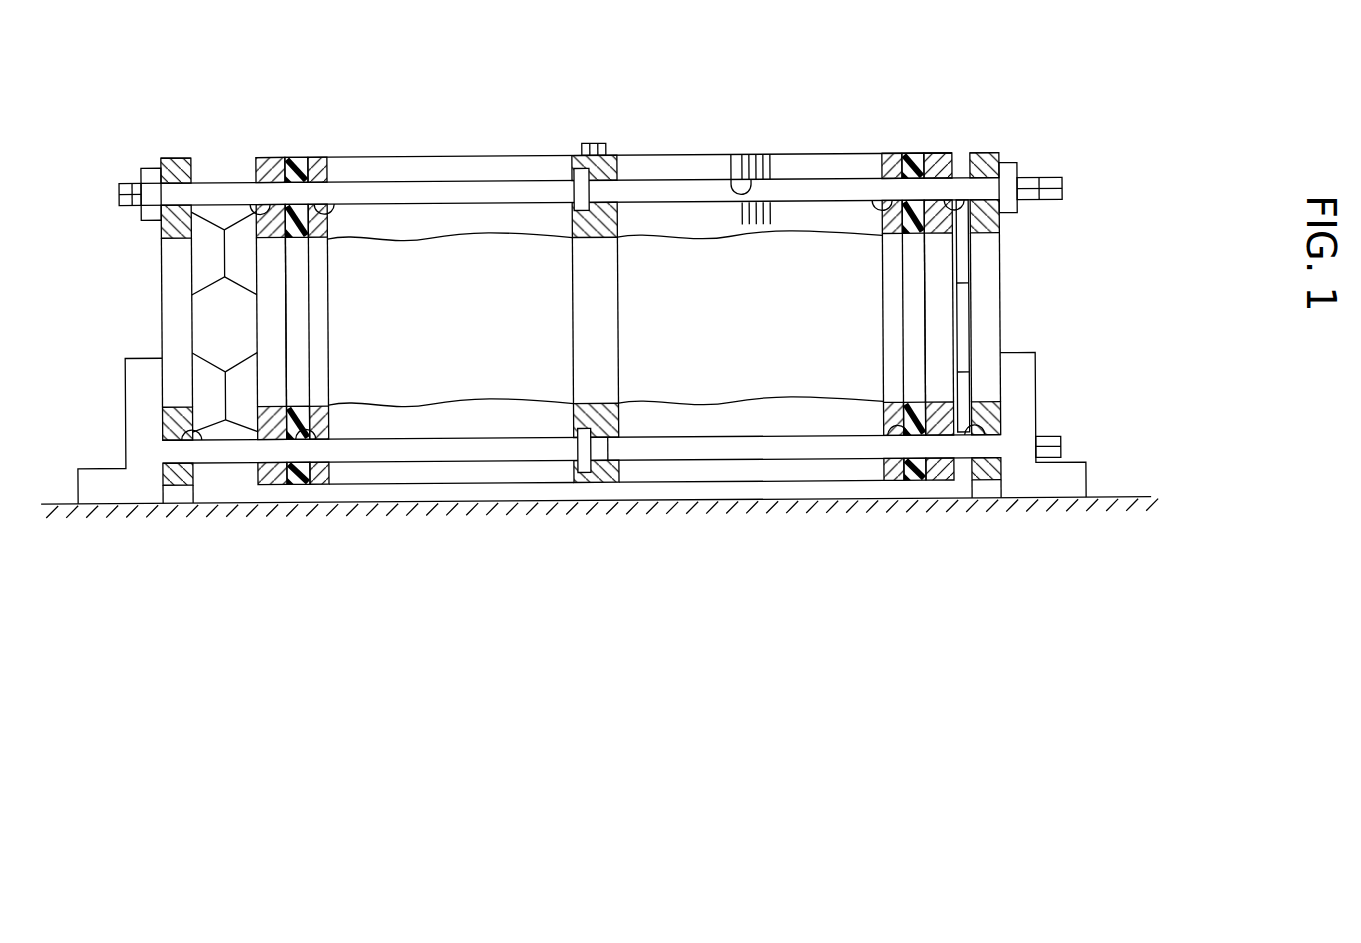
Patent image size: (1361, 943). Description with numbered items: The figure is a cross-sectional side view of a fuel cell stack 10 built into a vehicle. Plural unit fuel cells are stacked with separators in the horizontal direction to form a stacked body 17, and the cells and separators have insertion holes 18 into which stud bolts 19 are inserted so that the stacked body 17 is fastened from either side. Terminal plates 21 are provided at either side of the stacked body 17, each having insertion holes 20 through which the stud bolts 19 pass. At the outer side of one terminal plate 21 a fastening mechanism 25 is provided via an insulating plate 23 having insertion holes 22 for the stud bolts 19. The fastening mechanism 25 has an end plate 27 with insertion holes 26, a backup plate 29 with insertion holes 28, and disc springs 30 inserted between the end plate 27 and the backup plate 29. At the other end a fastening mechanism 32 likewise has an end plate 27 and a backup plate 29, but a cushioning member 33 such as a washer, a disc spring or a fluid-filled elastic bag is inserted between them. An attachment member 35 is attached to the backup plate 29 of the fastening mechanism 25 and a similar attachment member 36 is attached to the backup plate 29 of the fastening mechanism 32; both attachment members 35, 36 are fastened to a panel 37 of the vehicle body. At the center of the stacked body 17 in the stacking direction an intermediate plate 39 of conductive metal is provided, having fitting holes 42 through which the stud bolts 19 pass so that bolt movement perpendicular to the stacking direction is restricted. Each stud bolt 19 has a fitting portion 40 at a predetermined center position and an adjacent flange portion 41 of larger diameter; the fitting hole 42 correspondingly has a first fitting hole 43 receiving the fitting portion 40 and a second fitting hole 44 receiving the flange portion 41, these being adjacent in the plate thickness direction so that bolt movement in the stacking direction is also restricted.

The fuel cell stack 10 is at (879, 77).
The stacked body 17 is at (521, 156).
The insertion holes 18 is at (732, 158).
The stud bolts 19 is at (433, 180).
The insertion holes 20 is at (328, 186).
The terminal plates 21 is at (313, 156).
The insertion holes 22 is at (315, 457).
The insulating plate 23 is at (297, 488).
The fastening mechanism 25 is at (192, 120).
The insertion holes 26 is at (257, 190).
The end plate 27 is at (269, 156).
The insertion holes 28 is at (202, 457).
The backup plate 29 is at (184, 488).
The disc springs 30 is at (200, 263).
The fastening mechanism 32 is at (996, 79).
The cushioning member 33 is at (962, 262).
The attachment member 35 is at (79, 468).
The attachment member 36 is at (1081, 484).
The panel 37 is at (597, 513).
The intermediate plate 39 is at (622, 349).
The fitting portion 40 is at (614, 250).
The flange portion 41 is at (579, 240).
The fitting holes 42 is at (677, 508).
The first fitting hole 43 is at (607, 444).
The second fitting hole 44 is at (587, 434).